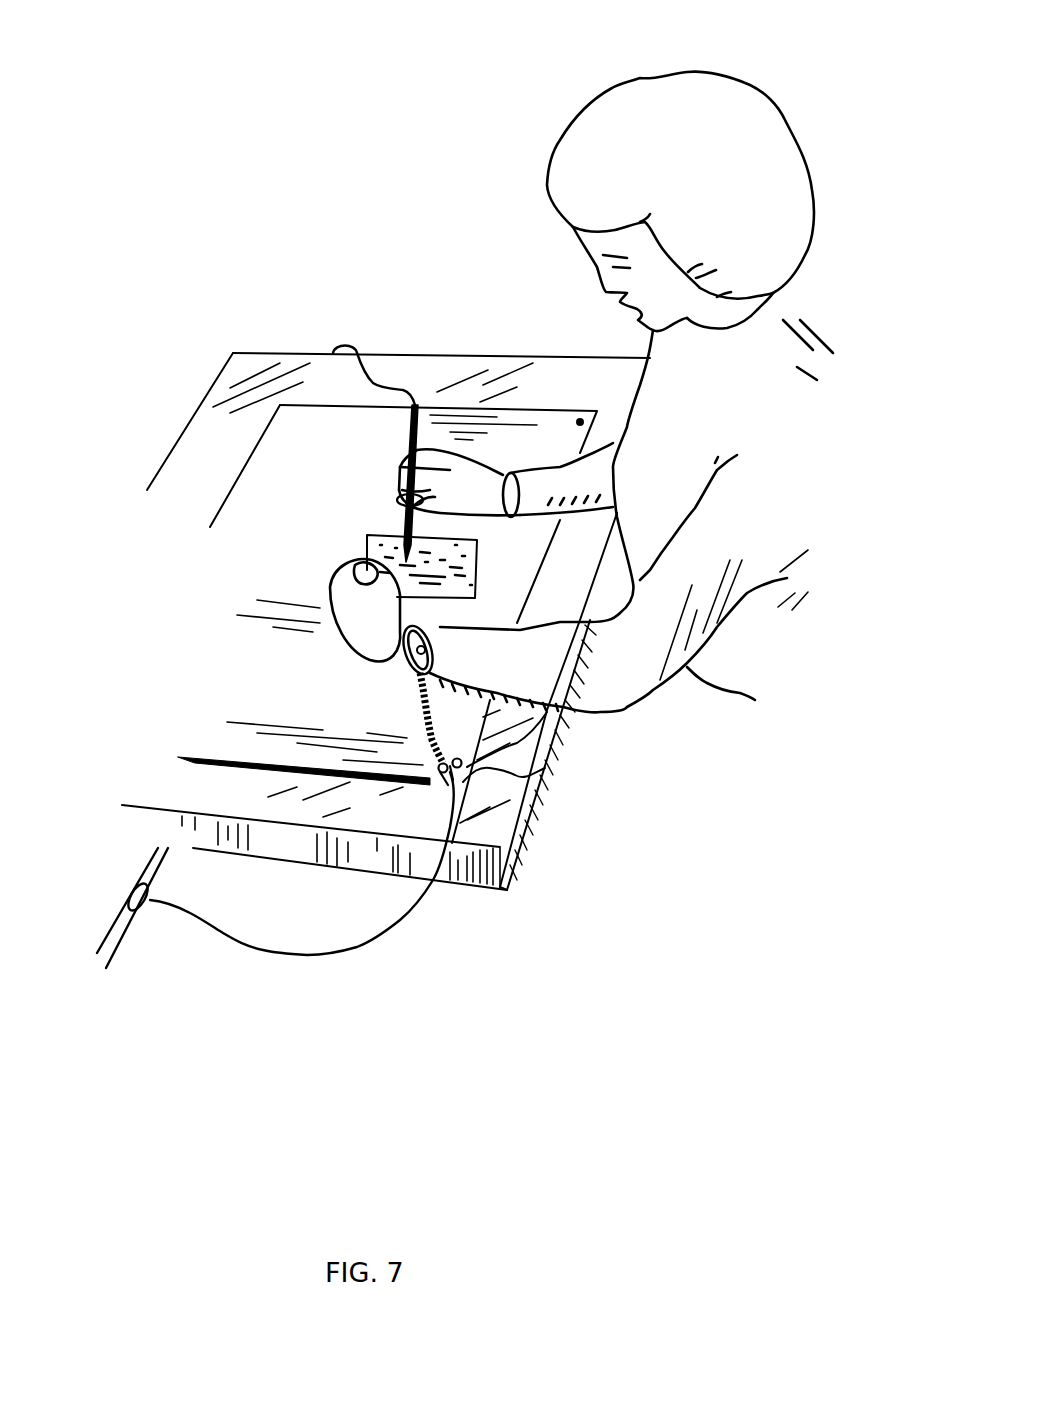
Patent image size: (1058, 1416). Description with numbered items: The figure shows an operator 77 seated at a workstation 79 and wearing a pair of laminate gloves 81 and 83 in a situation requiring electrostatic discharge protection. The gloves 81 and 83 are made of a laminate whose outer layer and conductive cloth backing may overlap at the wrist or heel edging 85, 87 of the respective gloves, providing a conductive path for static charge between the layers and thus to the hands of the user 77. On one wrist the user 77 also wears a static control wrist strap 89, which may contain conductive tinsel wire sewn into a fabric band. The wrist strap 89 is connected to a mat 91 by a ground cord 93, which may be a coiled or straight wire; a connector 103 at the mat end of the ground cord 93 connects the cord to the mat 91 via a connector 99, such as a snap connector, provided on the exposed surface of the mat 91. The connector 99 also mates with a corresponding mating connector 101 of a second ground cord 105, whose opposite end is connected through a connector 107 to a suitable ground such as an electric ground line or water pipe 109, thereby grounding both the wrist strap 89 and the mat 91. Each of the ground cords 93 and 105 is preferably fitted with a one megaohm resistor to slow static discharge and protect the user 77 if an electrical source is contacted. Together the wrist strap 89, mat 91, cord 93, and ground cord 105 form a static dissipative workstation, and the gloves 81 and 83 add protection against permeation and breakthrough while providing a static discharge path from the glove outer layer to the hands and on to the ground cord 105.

The operator 77 is at (621, 68).
The workstation 79 is at (332, 325).
The glove 81 is at (403, 470).
The glove 83 is at (330, 587).
The wrist or heel edging 85 is at (503, 475).
The wrist or heel edging 87 is at (400, 660).
The static control wrist strap 89 is at (432, 623).
The mat 91 is at (243, 767).
The ground cord 93 is at (418, 703).
The connector 99 is at (443, 783).
The mating connector 101 is at (547, 770).
The connector 103 is at (560, 731).
The ground cord 105 is at (367, 947).
The connector 107 is at (152, 895).
The water pipe 109 is at (137, 890).